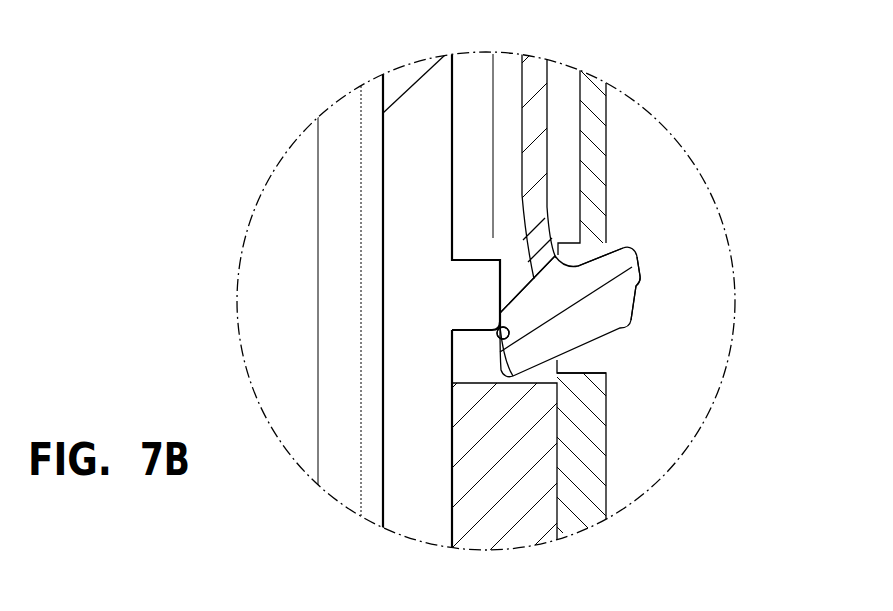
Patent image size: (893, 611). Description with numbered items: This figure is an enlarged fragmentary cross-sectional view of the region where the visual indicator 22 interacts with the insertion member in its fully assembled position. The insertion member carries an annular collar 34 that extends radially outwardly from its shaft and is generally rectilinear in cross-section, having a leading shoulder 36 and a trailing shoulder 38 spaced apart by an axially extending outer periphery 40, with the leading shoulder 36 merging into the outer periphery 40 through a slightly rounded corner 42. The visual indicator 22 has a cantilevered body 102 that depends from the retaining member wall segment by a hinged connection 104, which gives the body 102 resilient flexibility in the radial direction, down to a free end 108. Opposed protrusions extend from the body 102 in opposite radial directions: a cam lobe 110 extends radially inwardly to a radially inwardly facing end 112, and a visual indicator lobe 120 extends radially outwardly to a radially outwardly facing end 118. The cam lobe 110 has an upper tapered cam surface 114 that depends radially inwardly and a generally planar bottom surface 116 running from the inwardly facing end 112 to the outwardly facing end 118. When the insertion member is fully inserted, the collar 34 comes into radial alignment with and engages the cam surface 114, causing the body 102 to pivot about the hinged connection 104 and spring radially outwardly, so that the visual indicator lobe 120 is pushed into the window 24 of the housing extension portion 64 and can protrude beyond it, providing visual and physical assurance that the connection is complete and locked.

The visual indicator 22 is at (604, 323).
The window 24 is at (590, 373).
The annular collar 34 is at (496, 278).
The leading shoulder 36 is at (497, 333).
The trailing shoulder 38 is at (512, 258).
The outer periphery 40 is at (438, 291).
The corner 42 is at (503, 333).
The extension portion 64 is at (606, 158).
The body 102 is at (538, 192).
The hinged connection 104 is at (547, 102).
The free end 108 is at (606, 406).
The cam lobe 110 is at (512, 360).
The radially inwardly facing end 112 is at (496, 340).
The tapered cam surface 114 is at (512, 300).
The bottom surface 116 is at (505, 468).
The radially outwardly facing end 118 is at (627, 253).
The visual indicator lobe 120 is at (623, 288).